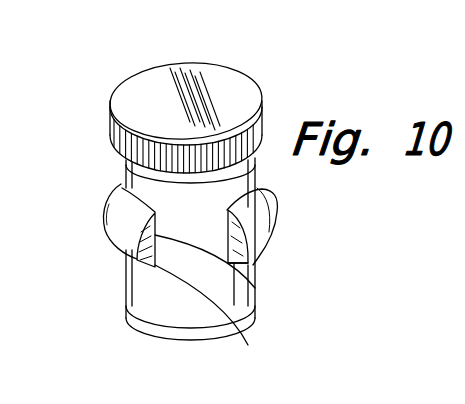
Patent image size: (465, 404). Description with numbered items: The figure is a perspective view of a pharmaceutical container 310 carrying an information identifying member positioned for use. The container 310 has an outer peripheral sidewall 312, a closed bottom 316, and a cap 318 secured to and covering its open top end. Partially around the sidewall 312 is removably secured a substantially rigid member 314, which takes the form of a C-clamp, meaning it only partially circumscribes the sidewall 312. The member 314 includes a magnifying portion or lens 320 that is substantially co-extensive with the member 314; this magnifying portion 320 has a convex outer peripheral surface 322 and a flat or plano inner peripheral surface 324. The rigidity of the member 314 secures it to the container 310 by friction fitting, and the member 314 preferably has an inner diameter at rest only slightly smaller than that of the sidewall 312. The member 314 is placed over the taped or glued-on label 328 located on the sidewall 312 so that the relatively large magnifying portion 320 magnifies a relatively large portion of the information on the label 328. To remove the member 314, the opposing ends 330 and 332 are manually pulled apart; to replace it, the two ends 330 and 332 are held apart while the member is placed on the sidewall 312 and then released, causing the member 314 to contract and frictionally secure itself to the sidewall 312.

The pharmaceutical container 310 is at (94, 86).
The outer peripheral sidewall 312 is at (128, 307).
The substantially rigid member 314 is at (104, 257).
The closed bottom 316 is at (178, 341).
The cap 318 is at (263, 110).
The magnifying portion 320 is at (125, 188).
The convex outer peripheral surface 322 is at (107, 212).
The plano inner peripheral surface 324 is at (255, 288).
The label 328 is at (277, 201).
The first opposing end 330 is at (248, 345).
The second opposing end 332 is at (254, 273).